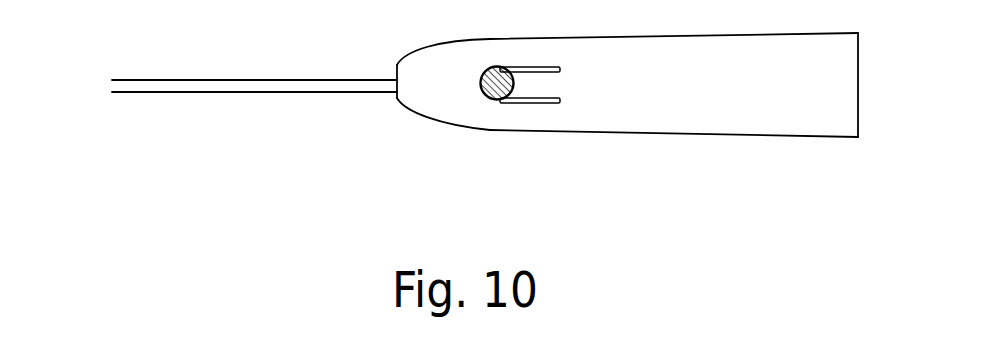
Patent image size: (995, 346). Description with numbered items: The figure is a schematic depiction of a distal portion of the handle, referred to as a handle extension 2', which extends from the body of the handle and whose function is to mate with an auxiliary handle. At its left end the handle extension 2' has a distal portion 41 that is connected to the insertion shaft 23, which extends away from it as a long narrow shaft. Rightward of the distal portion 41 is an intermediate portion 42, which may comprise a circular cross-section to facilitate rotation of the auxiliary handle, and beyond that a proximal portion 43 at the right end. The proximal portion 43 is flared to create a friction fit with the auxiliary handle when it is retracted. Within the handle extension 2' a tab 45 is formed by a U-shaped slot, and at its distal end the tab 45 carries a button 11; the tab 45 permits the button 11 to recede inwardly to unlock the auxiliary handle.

The insertion shaft 23 is at (313, 88).
The distal portion 41 is at (428, 121).
The intermediate portion 42 is at (677, 113).
The proximal portion 43 is at (838, 120).
The button 11 is at (493, 100).
The tab 45 is at (533, 88).
The handle extension 2' is at (767, 203).